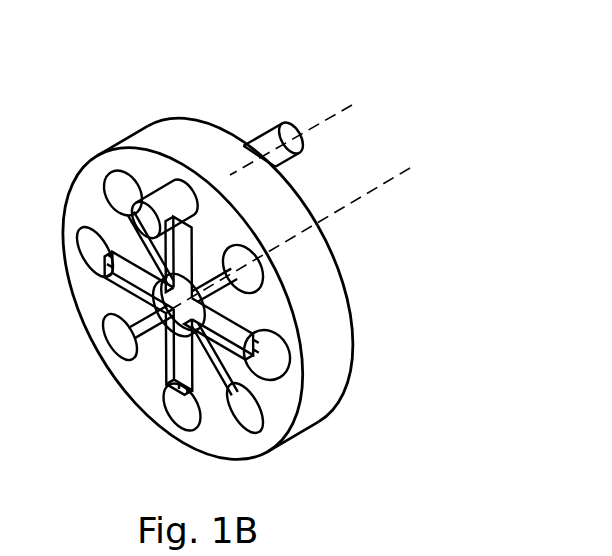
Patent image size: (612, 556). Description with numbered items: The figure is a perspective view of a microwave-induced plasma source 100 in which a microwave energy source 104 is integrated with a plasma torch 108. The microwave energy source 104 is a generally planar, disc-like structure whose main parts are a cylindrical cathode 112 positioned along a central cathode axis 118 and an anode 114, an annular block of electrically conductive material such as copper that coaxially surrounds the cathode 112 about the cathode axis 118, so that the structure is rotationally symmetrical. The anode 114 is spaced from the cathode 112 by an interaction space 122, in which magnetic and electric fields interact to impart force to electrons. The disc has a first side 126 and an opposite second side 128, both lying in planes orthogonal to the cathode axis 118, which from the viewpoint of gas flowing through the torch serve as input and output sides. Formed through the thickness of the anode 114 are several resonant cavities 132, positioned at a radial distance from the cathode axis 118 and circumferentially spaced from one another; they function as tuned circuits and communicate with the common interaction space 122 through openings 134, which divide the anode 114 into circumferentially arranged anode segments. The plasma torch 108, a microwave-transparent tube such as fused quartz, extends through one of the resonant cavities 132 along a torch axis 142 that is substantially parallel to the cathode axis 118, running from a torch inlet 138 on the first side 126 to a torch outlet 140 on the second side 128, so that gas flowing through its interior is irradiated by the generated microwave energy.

The microwave-induced plasma source 100 is at (240, 88).
The microwave energy source 104 is at (348, 305).
The plasma torch 108 is at (256, 132).
The cathode 112 is at (147, 293).
The anode 114 is at (98, 212).
The cathode axis 118 is at (390, 184).
The interaction space 122 is at (163, 338).
The first side 126 is at (359, 347).
The second side 128 is at (132, 423).
The resonant cavities 132 is at (246, 413).
The openings 134 is at (232, 367).
The torch inlet 138 is at (306, 147).
The torch outlet 140 is at (134, 222).
The torch axis 142 is at (348, 104).